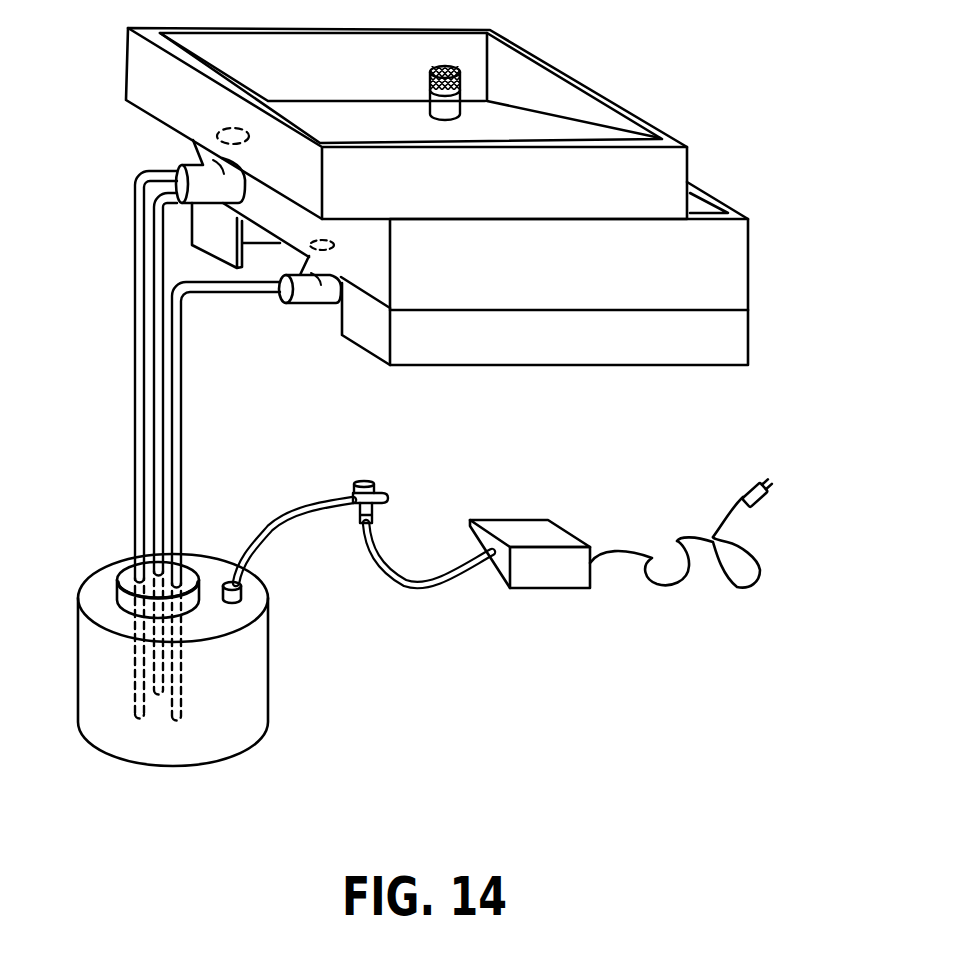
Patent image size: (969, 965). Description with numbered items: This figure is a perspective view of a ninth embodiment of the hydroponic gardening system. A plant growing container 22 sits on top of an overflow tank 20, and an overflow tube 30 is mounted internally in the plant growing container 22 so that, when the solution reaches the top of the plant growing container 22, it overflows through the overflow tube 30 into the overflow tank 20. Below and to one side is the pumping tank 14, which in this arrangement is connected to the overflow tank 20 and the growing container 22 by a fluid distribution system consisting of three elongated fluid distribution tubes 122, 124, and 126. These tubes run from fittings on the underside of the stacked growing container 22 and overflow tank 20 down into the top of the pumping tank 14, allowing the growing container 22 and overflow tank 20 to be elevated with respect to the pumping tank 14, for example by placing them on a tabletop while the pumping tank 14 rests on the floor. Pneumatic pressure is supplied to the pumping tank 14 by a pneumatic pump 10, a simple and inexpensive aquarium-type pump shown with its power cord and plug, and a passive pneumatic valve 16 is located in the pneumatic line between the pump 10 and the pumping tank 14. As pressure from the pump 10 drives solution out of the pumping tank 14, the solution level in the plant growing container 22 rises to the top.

The pneumatic pump 10 is at (548, 570).
The pumping tank 14 is at (243, 668).
The passive pneumatic valve 16 is at (388, 494).
The overflow tank 20 is at (712, 195).
The plant growing container 22 is at (607, 100).
The overflow tube 30 is at (445, 103).
The fluid distribution tube 122 is at (137, 363).
The fluid distribution tube 124 is at (158, 403).
The fluid distribution tube 126 is at (178, 390).